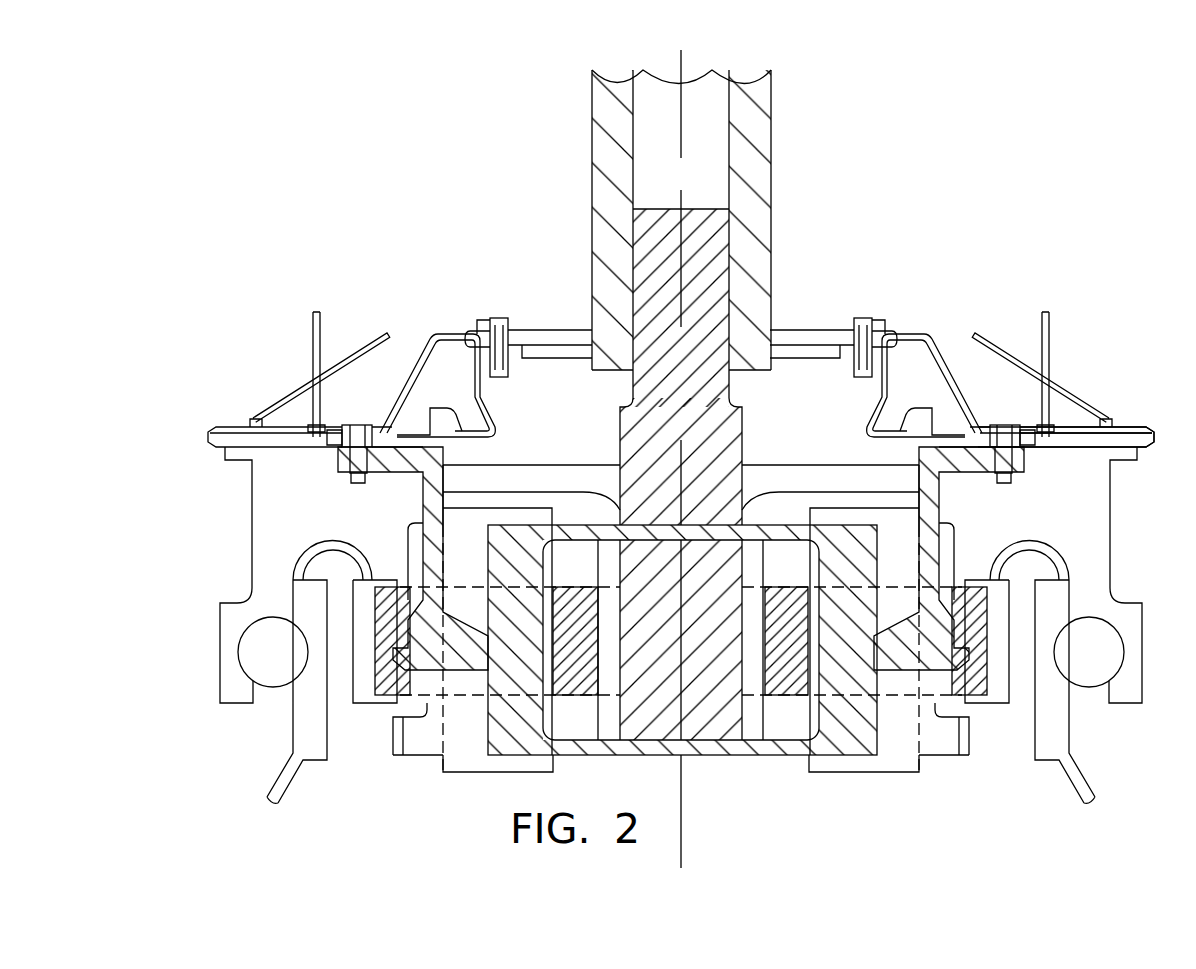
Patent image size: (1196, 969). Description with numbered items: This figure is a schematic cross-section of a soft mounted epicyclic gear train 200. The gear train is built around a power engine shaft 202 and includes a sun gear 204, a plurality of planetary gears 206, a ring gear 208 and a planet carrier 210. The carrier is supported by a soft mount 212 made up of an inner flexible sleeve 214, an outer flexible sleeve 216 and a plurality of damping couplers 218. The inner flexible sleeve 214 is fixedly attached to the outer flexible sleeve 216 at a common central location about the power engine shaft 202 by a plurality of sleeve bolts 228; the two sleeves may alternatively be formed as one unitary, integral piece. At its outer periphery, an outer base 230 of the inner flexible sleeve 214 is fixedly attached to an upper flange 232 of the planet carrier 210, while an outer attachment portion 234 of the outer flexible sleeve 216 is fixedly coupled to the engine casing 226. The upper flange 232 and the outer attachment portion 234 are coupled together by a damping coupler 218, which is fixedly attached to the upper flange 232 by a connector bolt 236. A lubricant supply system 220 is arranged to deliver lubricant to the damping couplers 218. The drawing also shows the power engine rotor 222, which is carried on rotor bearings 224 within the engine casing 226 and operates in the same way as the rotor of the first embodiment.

The epicyclic gear train 200 is at (1015, 209).
The power engine shaft 202 is at (771, 173).
The sun gear 204 is at (753, 697).
The planetary gears 206 is at (930, 697).
The ring gear 208 is at (963, 705).
The planet carrier 210 is at (937, 493).
The soft mount 212 is at (803, 327).
The inner flexible sleeve 214 is at (878, 418).
The outer flexible sleeve 216 is at (927, 337).
The damping couplers 218 is at (345, 425).
The lubricant supply system 220 is at (313, 325).
The power engine rotor 222 is at (316, 762).
The rotor bearings 224 is at (273, 688).
The engine casing 226 is at (208, 580).
The sleeve bolts 228 is at (500, 317).
The outer base 230 is at (420, 430).
The upper flange 232 is at (344, 452).
The outer attachment portion 234 is at (988, 426).
The connector bolt 236 is at (358, 483).